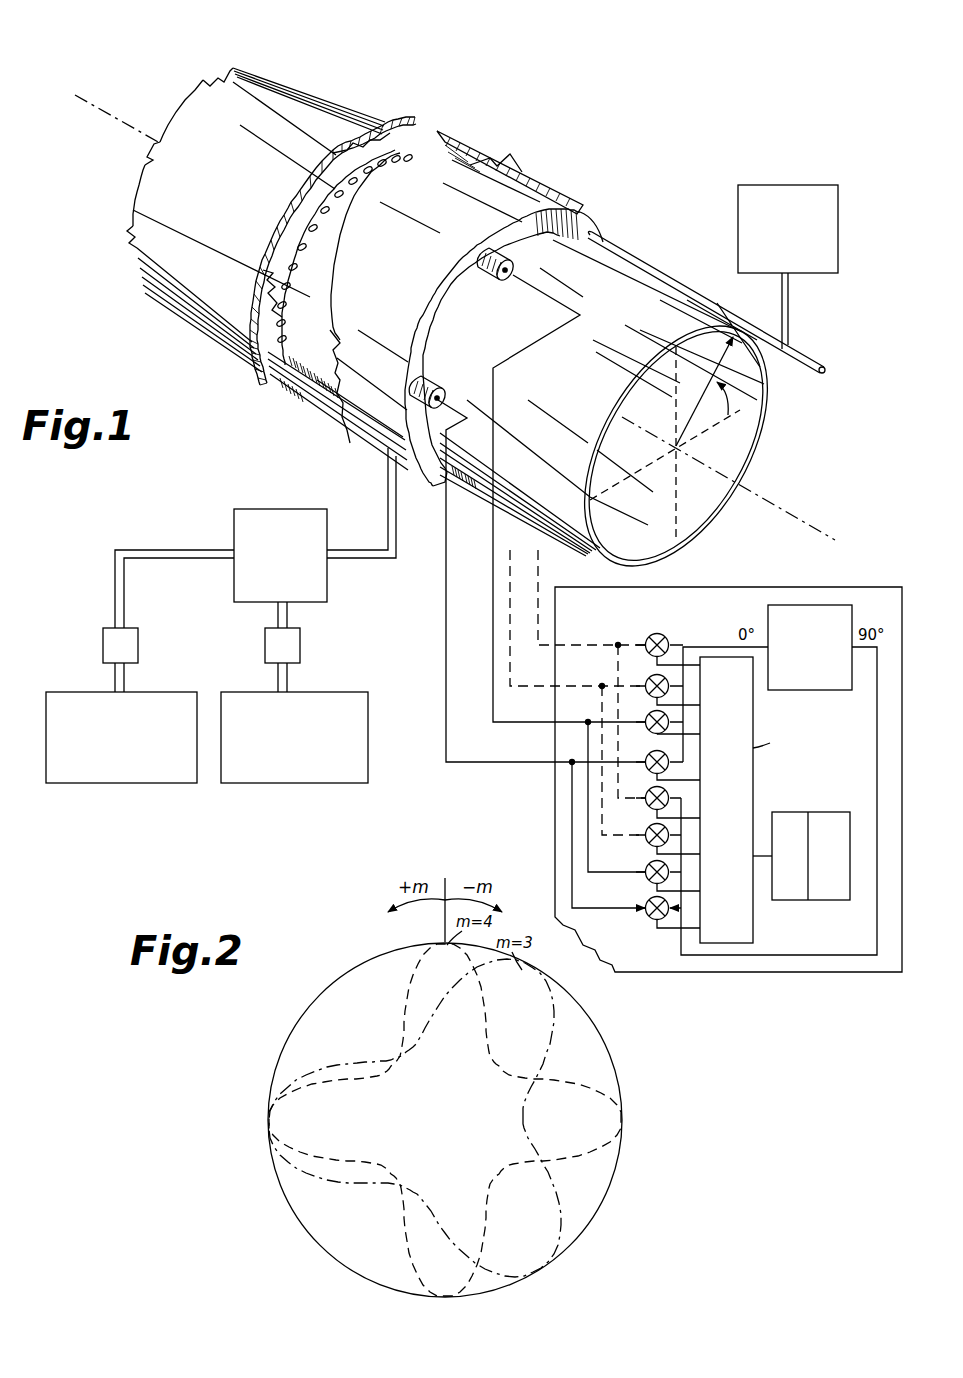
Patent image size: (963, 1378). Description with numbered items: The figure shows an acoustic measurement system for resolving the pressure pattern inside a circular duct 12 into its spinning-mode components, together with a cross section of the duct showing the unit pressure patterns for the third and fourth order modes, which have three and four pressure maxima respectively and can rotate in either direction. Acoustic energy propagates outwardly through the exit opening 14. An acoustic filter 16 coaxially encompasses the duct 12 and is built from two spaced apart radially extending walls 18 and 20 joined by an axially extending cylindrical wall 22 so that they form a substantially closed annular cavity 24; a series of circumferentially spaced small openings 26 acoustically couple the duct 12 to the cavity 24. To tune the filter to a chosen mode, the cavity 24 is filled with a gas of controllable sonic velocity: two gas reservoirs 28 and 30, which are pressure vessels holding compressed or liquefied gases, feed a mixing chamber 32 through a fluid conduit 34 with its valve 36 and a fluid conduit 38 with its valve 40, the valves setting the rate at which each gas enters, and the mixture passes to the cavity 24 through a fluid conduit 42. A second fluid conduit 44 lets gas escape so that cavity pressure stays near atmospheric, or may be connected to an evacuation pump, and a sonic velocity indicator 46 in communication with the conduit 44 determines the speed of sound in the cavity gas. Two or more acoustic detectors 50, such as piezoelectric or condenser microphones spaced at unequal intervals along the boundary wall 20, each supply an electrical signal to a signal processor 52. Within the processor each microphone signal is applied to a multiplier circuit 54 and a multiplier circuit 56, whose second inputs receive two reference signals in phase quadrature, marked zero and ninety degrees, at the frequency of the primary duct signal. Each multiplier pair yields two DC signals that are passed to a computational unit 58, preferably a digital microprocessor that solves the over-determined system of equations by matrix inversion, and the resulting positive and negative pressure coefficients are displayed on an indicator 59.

In FIG. 1, the circular duct 12 is at (328, 118).
In FIG. 1, the exit opening 14 is at (696, 506).
In FIG. 1, the acoustic filter 16 is at (545, 210).
In FIG. 2, the acoustic filter 16 is at (622, 1100).
In FIG. 1, the radially extending wall 18 is at (420, 135).
In FIG. 1, the radially extending wall 20 is at (572, 222).
In FIG. 1, the cylindrical wall 22 is at (530, 205).
In FIG. 1, the annular cavity 24 is at (470, 150).
In FIG. 1, the openings 26 is at (316, 234).
In FIG. 1, the gas reservoir 28 is at (160, 788).
In FIG. 1, the gas reservoir 30 is at (327, 788).
In FIG. 1, the mixing chamber 32 is at (327, 595).
In FIG. 1, the fluid conduit 34 is at (124, 596).
In FIG. 1, the valve 36 is at (138, 645).
In FIG. 1, the fluid conduit 38 is at (287, 614).
In FIG. 1, the valve 40 is at (300, 650).
In FIG. 1, the fluid conduit 42 is at (396, 527).
In FIG. 1, the second fluid conduit 44 is at (680, 290).
In FIG. 1, the sonic velocity indicator 46 is at (840, 235).
In FIG. 1, the acoustic detector 50 is at (504, 280).
In FIG. 1, the signal processor 52 is at (728, 779).
In FIG. 1, the multiplier circuit 54 is at (662, 636).
In FIG. 1, the multiplier circuit 56 is at (852, 616).
In FIG. 1, the computational unit 58 is at (753, 785).
In FIG. 1, the power output unit 59 is at (840, 812).